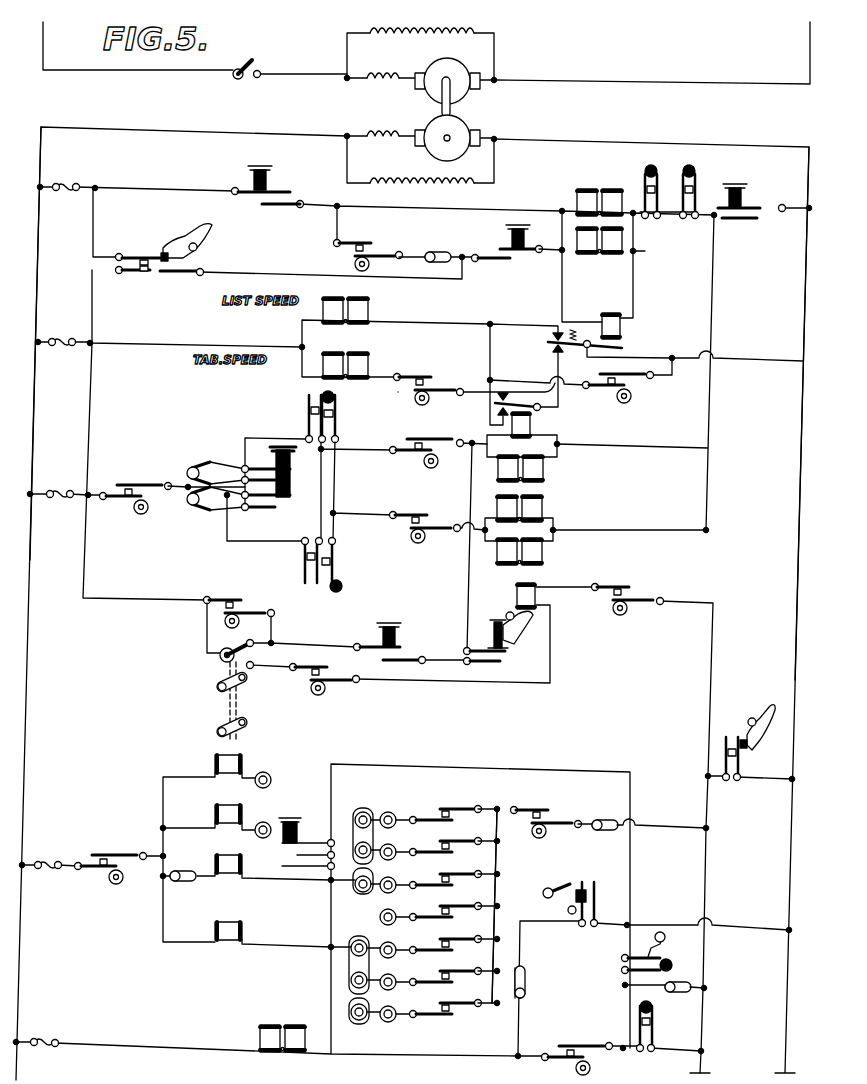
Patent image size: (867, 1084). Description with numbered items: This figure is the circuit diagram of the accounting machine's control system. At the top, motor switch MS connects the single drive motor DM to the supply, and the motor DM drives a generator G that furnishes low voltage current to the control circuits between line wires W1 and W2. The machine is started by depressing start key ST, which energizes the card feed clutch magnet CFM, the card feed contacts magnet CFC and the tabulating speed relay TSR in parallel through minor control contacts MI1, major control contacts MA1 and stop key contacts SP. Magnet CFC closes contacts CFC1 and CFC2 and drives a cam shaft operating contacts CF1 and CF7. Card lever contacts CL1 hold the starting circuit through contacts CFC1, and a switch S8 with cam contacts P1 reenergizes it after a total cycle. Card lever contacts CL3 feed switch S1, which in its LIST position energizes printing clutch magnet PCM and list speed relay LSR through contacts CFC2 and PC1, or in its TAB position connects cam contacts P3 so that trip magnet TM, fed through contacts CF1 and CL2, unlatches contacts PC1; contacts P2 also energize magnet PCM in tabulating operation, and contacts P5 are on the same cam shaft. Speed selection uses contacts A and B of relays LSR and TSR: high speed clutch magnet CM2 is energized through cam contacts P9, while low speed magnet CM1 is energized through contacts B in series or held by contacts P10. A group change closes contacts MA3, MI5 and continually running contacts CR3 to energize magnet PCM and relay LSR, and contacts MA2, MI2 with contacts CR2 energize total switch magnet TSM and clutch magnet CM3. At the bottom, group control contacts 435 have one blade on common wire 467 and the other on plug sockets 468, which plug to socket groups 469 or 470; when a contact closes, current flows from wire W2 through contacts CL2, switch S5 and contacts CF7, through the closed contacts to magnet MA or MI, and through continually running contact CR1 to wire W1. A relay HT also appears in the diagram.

The motor switch MS is at (252, 80).
The drive motor DM is at (465, 70).
The generator G is at (462, 128).
The start key ST is at (285, 198).
The minor control contacts MI1 is at (645, 190).
The major control contacts MA1 is at (695, 193).
The stop key contacts SP is at (765, 205).
The line wire W1 is at (38, 283).
The line wire W2 is at (807, 286).
The card feed clutch magnet CFM is at (575, 203).
The card feed contacts magnet CFC is at (588, 240).
The card feed contacts CFC1 is at (500, 253).
The cam contacts P1 is at (378, 246).
The switch S8 is at (440, 250).
The card lever contacts CL1 is at (185, 266).
The card lever contacts CL3 is at (145, 276).
The low speed clutch magnet CM1 is at (360, 310).
The tabulating speed clutch magnet CM2 is at (360, 362).
The cam contacts P9 is at (430, 380).
The tabulating speed relay TSR is at (620, 327).
The cam contacts P10 is at (630, 381).
The relay contacts A is at (498, 400).
The relay contacts B is at (495, 405).
The major control contacts MA3 is at (318, 406).
The major control contacts MA2 is at (336, 423).
The heater relay HT is at (272, 447).
The list speed relay LSR is at (530, 428).
The cam contacts P5 is at (420, 440).
The printing clutch magnet PCM is at (540, 470).
The continually running contacts CR3 is at (128, 490).
The clutch magnet CM3 is at (540, 504).
The continually running contacts CR2 is at (415, 523).
The total switch magnet TSM is at (540, 556).
The minor control contacts MI5 is at (302, 556).
The minor control contacts MI2 is at (335, 563).
The cam contacts P2 is at (243, 605).
The trip magnet TM is at (530, 595).
The card feed contacts CF1 is at (636, 595).
The switch S1 is at (222, 662).
The list position LIST is at (271, 643).
The tab position TAB is at (255, 668).
The cam contacts P3 is at (330, 670).
The card feed contacts CFC2 is at (398, 655).
The printing control contacts PC1 is at (505, 665).
The card lever contacts CL2 is at (735, 736).
The plug sockets 470 is at (355, 825).
The plug sockets 468 is at (395, 812).
The group control contacts 435 is at (460, 820).
The card feed contacts CF7 is at (555, 810).
The switch S5 is at (608, 832).
The common wire 467 is at (497, 865).
The plug sockets 469 is at (352, 960).
The continually running contact CR1 is at (100, 857).
The major group control magnet MA is at (226, 866).
The minor group control magnet MI is at (230, 930).